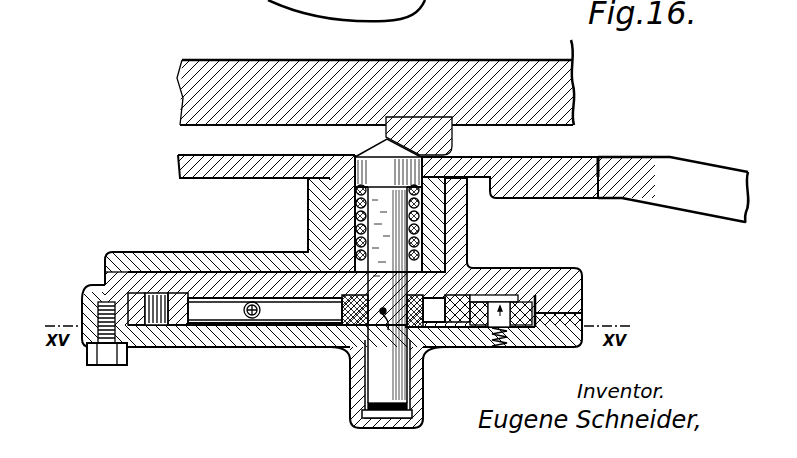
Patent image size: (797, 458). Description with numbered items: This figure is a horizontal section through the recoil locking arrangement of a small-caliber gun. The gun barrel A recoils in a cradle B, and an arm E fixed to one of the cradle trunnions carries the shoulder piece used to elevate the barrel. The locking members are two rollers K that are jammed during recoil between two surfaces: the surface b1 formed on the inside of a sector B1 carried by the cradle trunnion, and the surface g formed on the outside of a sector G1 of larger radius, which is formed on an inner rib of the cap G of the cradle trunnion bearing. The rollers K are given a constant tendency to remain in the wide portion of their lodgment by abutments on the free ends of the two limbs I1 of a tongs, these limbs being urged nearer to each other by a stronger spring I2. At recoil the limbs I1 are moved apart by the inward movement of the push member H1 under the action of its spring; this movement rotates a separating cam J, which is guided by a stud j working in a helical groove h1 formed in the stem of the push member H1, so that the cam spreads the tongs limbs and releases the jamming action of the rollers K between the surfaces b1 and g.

The gun barrel A is at (508, 92).
The tooth on breech block a is at (438, 115).
The cradle B is at (262, 162).
The sector B1 is at (128, 305).
The jamming surface b1 is at (144, 346).
The arm E is at (700, 208).
The push member H1 is at (372, 164).
The separating cam J is at (322, 268).
The rollers K is at (152, 297).
The jamming surface g is at (170, 347).
The cap of the cradle trunnion bearing G is at (266, 340).
The sector G1 is at (183, 346).
The spring I2 is at (243, 324).
The tongs limbs I1 is at (303, 312).
The stud j is at (380, 315).
The helical groove h1 is at (430, 340).
The spring pin i is at (501, 341).